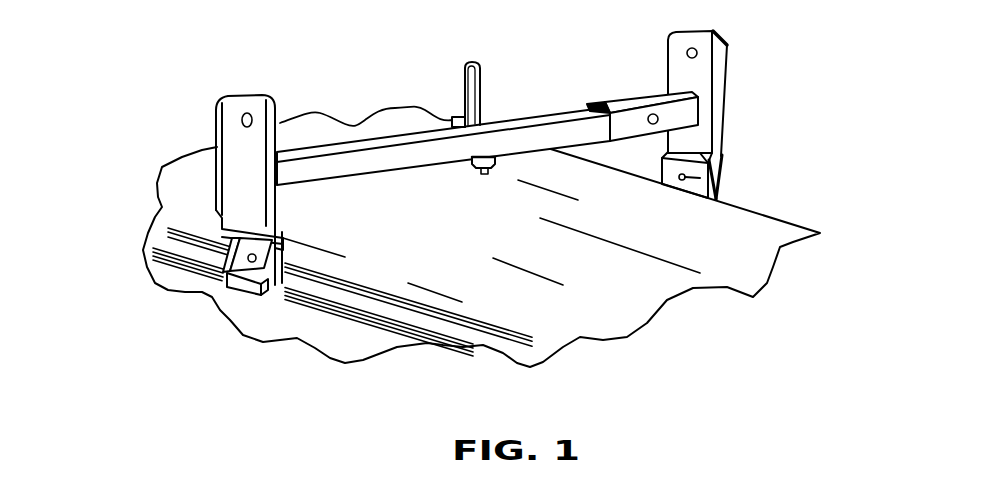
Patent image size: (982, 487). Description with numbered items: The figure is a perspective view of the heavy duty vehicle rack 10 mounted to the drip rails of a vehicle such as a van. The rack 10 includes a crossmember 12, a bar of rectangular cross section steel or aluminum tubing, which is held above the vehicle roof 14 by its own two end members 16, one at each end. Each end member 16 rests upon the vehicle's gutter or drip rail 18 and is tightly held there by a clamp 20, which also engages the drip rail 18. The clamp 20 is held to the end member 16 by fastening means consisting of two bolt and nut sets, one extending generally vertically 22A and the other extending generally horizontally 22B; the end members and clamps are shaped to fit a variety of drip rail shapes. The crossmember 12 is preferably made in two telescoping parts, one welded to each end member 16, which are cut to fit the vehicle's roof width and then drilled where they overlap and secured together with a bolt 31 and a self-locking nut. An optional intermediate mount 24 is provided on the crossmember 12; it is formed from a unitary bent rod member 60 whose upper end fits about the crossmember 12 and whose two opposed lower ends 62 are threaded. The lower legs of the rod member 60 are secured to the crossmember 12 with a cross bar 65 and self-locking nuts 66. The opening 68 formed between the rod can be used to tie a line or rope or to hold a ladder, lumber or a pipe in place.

The vehicle rack 10 is at (770, 77).
The crossmember 12 is at (487, 96).
The vehicle roof 14 is at (657, 288).
The end member 16 is at (215, 147).
The drip rail 18 is at (392, 335).
The clamp 20 is at (464, 250).
The vertical bolt and nut set 22A is at (222, 229).
The horizontal bolt and nut set 22B is at (768, 182).
The intermediate mount 24 is at (444, 118).
The bolt 31 is at (652, 113).
The bent rod member 60 is at (464, 62).
The threaded lower ends 62 is at (495, 162).
The cross bar 65 is at (473, 166).
The self-locking nuts 66 is at (487, 174).
The opening 68 is at (452, 118).